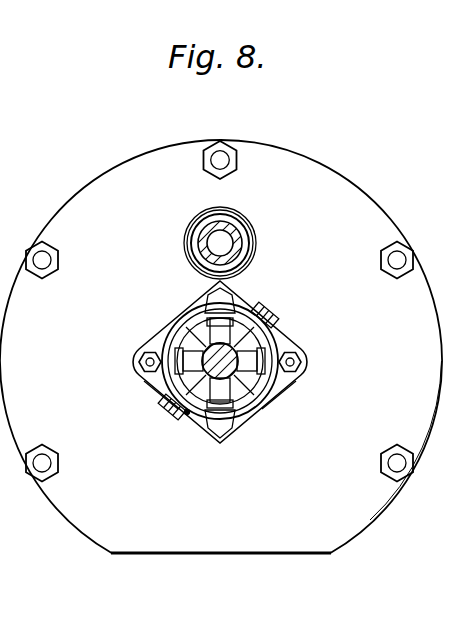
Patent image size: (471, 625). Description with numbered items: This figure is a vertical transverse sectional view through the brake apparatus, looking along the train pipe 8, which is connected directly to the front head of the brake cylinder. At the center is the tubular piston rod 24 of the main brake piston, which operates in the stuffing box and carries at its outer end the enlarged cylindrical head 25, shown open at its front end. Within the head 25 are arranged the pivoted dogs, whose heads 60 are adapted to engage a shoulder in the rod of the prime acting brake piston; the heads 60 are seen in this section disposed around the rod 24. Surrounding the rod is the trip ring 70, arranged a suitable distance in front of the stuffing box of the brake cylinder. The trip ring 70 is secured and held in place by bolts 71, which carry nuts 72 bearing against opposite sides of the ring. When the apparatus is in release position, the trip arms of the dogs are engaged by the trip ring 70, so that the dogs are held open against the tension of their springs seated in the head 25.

The train pipe 8 is at (243, 233).
The piston rod 24 is at (203, 345).
The enlarged cylindrical head 25 is at (267, 398).
The heads 60 is at (258, 350).
The trip ring 70 is at (283, 345).
The bolts 71 is at (140, 356).
The nuts 72 is at (143, 377).